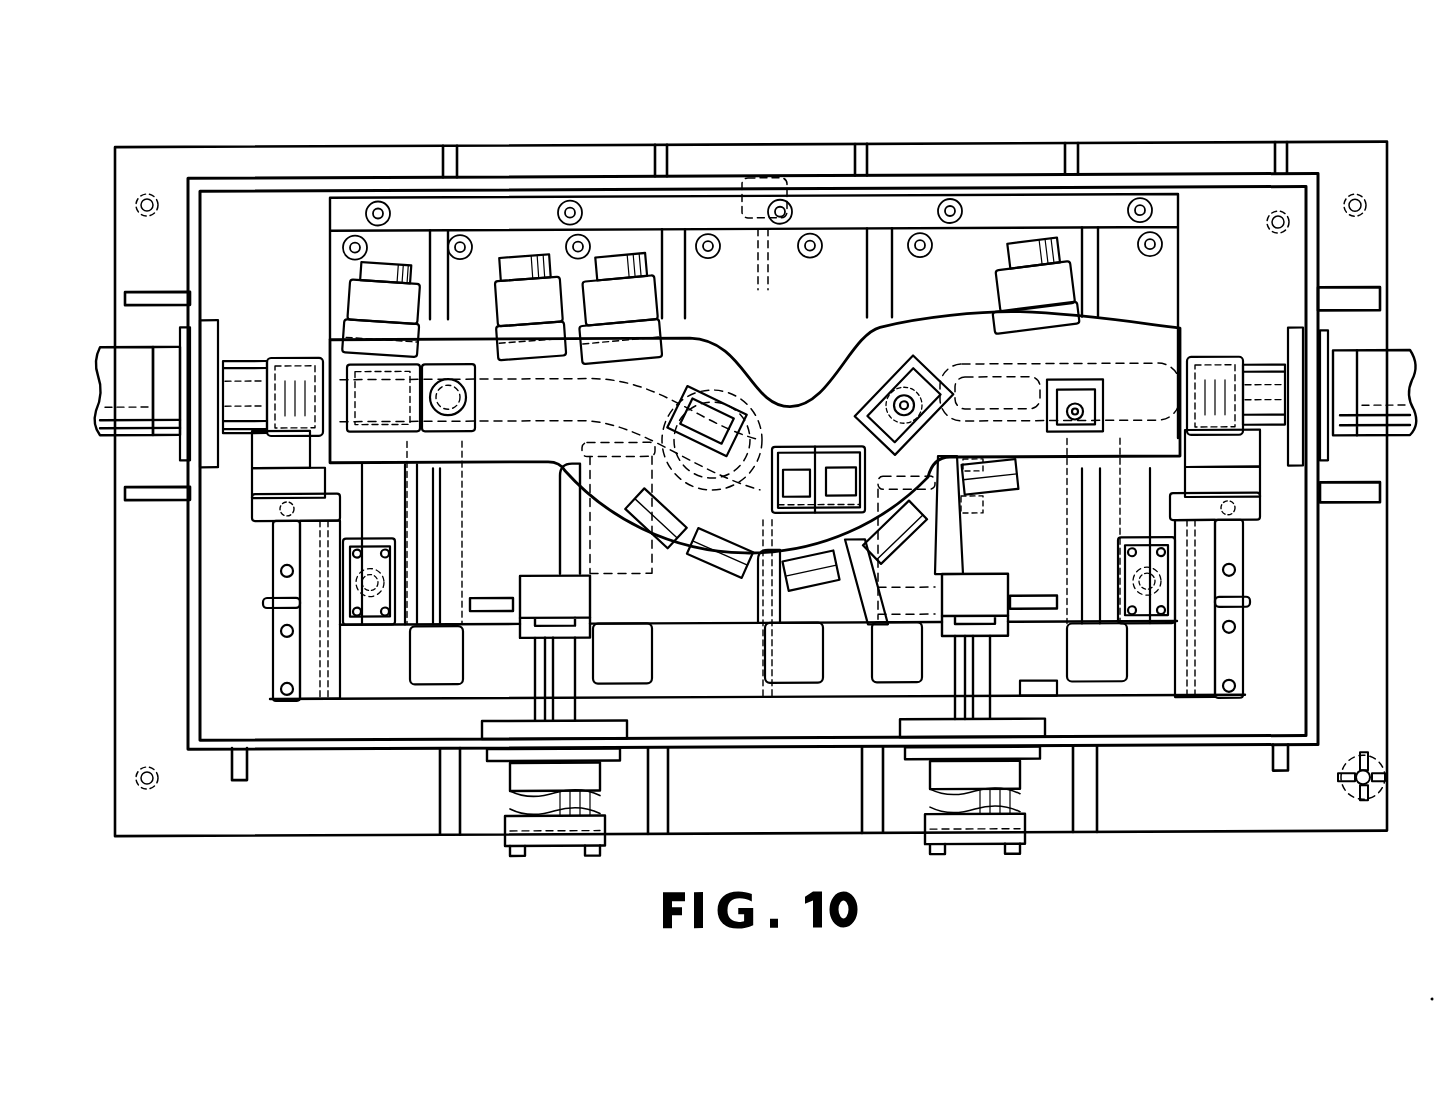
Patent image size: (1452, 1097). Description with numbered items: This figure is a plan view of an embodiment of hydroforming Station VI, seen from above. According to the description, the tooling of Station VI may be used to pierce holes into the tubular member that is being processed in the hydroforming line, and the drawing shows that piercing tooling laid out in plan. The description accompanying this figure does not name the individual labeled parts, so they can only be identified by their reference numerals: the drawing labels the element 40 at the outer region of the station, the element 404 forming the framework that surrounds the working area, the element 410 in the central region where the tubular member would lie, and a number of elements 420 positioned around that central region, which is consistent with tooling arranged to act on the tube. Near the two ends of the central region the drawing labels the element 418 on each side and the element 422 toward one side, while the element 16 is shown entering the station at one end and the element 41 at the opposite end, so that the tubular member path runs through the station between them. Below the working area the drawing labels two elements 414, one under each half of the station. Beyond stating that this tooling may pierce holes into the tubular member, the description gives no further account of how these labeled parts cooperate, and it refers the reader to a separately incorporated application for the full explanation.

The base plate 40 is at (1365, 144).
The frame 404 is at (365, 182).
The curved guide band 410 is at (513, 455).
The tool blocks 420 is at (525, 252).
The end blocks 418 is at (296, 363).
The center block 422 is at (1078, 386).
The left rail 16 is at (135, 368).
The right rail 41 is at (1392, 368).
The actuators 414 is at (548, 822).